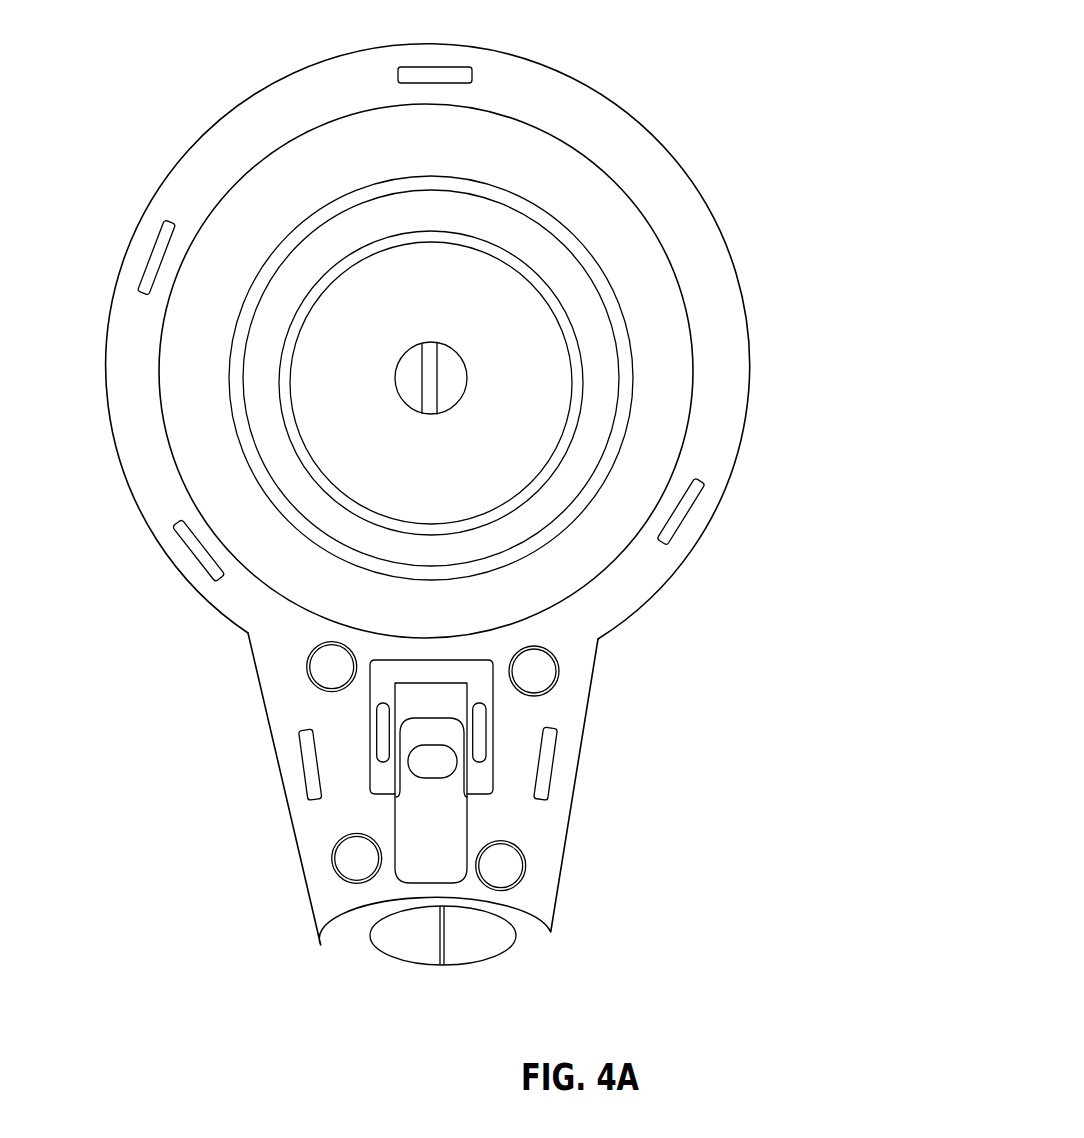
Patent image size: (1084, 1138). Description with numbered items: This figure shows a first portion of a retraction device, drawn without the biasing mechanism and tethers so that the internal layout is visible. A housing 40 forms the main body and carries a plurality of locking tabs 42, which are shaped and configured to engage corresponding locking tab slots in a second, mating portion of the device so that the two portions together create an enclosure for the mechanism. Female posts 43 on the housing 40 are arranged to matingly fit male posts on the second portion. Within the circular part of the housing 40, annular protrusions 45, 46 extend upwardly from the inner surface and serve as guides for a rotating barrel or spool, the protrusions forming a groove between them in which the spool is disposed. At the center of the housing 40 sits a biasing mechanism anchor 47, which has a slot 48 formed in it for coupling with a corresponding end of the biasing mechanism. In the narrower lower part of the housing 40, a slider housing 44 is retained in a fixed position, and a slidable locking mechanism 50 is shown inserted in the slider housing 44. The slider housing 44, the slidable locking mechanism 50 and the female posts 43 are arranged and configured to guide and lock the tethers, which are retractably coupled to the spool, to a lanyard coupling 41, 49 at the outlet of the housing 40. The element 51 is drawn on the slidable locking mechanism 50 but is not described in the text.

The housing 40 is at (570, 73).
The lanyard coupling 41 is at (418, 920).
The locking tabs 42 is at (152, 263).
The female posts 43 is at (535, 672).
The slider housing 44 is at (480, 775).
The annular protrusion 45 is at (610, 455).
The annular protrusion 46 is at (578, 405).
The biasing mechanism anchor 47 is at (452, 372).
The slot 48 is at (430, 348).
The lanyard coupling 49 is at (485, 930).
The slidable locking mechanism 50 is at (419, 822).
The button 51 is at (425, 758).